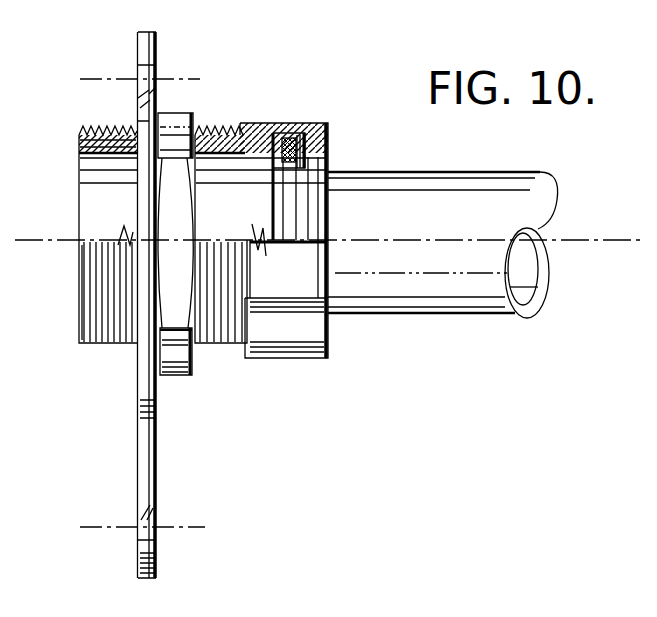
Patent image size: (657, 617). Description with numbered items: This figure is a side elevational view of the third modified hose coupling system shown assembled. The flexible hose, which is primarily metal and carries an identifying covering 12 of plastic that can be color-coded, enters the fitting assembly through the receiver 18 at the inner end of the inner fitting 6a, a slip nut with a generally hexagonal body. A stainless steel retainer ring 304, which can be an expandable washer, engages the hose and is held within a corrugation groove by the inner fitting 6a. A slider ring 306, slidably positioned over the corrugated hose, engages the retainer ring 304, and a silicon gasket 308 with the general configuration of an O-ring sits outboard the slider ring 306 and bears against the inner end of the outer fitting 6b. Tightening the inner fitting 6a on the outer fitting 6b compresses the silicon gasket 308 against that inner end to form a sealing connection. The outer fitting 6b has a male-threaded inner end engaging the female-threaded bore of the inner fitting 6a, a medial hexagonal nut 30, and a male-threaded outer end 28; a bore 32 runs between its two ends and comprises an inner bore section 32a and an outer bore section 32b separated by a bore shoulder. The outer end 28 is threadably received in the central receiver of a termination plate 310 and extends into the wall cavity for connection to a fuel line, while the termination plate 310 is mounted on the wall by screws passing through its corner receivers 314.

The termination plate 310 is at (160, 575).
The corner receivers 314 is at (160, 492).
The male-threaded outer end 28 is at (80, 346).
The bore 32 is at (105, 160).
The outer bore section 32b is at (128, 228).
The inner bore section 32a is at (242, 228).
The medial hexagonal nut 30 is at (172, 376).
The outer fitting 6b is at (194, 375).
The inner fitting 6a is at (325, 360).
The silicon gasket 308 is at (278, 130).
The slider ring 306 is at (289, 135).
The retainer ring 304 is at (298, 132).
The receiver 18 is at (331, 192).
The identifying covering 12 is at (432, 314).